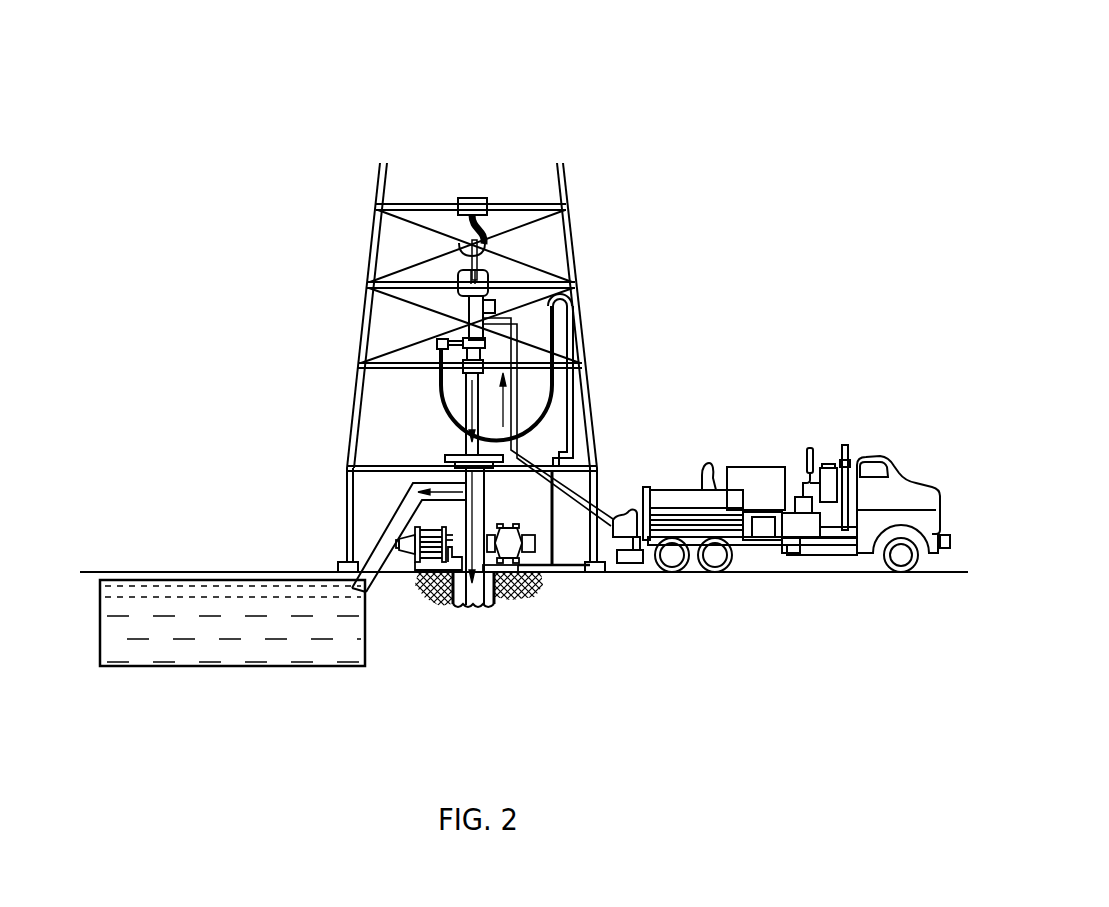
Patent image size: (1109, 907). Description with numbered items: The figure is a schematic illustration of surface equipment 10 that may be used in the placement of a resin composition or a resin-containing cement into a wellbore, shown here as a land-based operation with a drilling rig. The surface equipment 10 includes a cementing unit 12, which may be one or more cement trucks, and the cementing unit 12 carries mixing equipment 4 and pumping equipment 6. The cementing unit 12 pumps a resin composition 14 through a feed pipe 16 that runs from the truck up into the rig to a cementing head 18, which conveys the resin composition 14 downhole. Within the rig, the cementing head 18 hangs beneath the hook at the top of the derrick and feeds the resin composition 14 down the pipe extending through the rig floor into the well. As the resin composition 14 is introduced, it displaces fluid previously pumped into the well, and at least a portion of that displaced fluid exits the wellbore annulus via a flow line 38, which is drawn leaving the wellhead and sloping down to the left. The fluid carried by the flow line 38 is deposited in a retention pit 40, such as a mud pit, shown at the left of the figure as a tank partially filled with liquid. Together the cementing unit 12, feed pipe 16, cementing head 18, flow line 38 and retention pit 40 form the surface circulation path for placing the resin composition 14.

The surface equipment 10 is at (819, 203).
The cementing head 18 is at (512, 274).
The resin composition 14 is at (473, 400).
The feed pipe 16 is at (563, 486).
The pumping equipment 6 is at (628, 498).
The mixing equipment 4 is at (765, 532).
The cementing unit 12 is at (781, 559).
The flow line 38 is at (385, 556).
The retention pit 40 is at (152, 667).